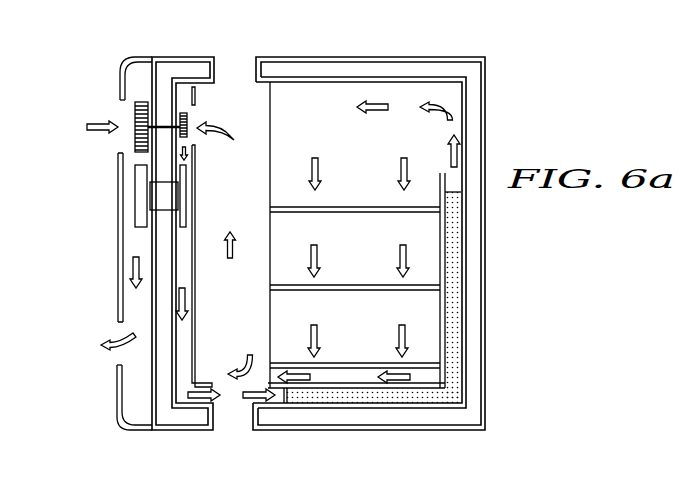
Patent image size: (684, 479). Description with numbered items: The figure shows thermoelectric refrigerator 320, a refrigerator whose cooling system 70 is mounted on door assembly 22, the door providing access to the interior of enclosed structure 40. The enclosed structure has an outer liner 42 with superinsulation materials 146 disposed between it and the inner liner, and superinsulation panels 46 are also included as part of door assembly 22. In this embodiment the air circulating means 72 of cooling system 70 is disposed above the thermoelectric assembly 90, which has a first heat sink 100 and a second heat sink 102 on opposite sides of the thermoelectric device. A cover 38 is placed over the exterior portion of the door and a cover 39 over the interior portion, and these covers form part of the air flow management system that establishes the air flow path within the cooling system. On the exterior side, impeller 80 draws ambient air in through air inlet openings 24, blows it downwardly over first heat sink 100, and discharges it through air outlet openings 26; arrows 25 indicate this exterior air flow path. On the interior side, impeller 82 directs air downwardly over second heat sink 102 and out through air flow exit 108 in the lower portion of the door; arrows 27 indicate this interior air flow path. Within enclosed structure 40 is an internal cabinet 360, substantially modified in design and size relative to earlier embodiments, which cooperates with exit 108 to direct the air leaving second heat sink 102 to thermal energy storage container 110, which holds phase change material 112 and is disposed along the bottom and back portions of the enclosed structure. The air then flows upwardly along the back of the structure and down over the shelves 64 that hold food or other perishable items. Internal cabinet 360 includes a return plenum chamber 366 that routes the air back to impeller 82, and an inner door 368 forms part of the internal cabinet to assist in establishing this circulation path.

The door assembly 22 is at (150, 435).
The air inlet openings 24 is at (119, 153).
The arrows 25 is at (86, 125).
The air outlet openings 26 is at (118, 363).
The arrows 27 is at (233, 138).
The cover 38 is at (120, 272).
The cover 39 is at (196, 220).
The enclosed structure 40 is at (496, 123).
The outer liner 42 is at (353, 58).
The superinsulation panels 46 is at (170, 65).
The shelves 64 is at (365, 207).
The cooling system 70 is at (88, 180).
The air circulating means 72 is at (134, 68).
The impeller 80 is at (135, 110).
The impeller 82 is at (187, 121).
The thermoelectric assembly 90 is at (128, 197).
The first heat sink 100 is at (143, 228).
The second heat sink 102 is at (187, 193).
The air flow exit 108 is at (218, 387).
The thermal energy storage container 110 is at (471, 282).
The phase change material 112 is at (462, 330).
The superinsulation materials 146 is at (447, 67).
The thermoelectric refrigerator 320 is at (512, 71).
The internal cabinet 360 is at (431, 228).
The plenum chamber 366 is at (338, 374).
The inner door 368 is at (272, 155).